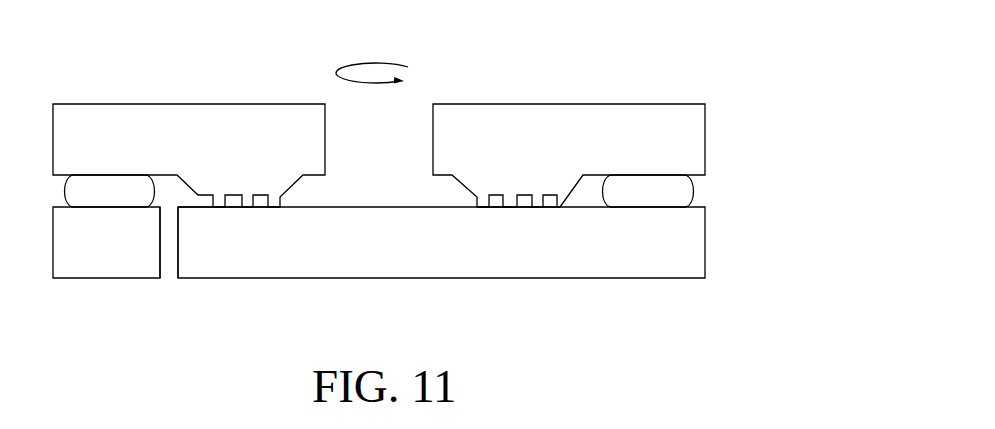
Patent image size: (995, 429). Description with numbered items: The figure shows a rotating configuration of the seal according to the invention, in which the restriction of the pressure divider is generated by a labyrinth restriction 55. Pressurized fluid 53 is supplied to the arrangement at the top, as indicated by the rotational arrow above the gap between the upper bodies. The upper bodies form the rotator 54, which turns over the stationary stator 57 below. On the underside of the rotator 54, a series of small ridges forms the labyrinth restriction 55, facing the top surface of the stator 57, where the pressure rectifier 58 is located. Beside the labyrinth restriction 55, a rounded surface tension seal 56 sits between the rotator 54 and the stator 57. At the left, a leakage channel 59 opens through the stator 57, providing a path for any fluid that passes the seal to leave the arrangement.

The pressurized fluid 53 is at (391, 123).
The rotator 54 is at (654, 124).
The labyrinth restriction 55 is at (519, 192).
The surface tension seal 56 is at (653, 192).
The stator 57 is at (692, 218).
The pressure rectifier 58 is at (589, 207).
The leakage channel 59 is at (167, 263).